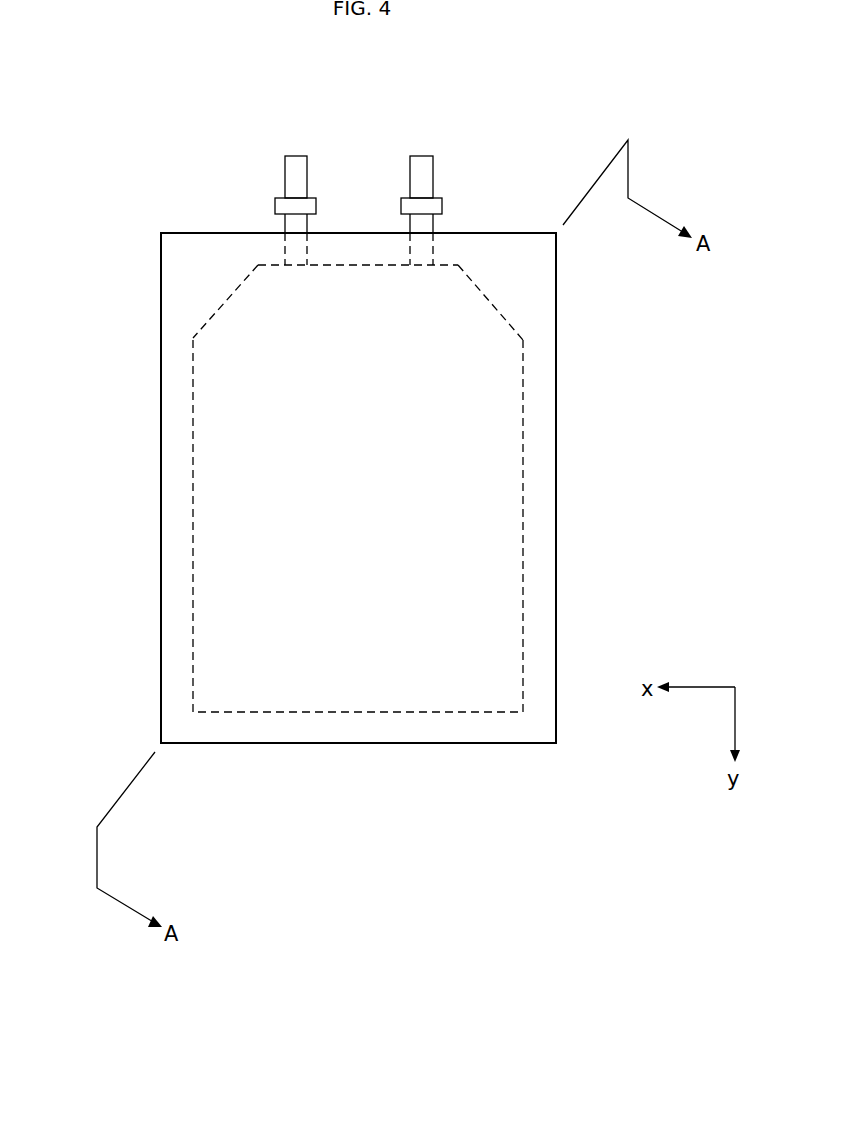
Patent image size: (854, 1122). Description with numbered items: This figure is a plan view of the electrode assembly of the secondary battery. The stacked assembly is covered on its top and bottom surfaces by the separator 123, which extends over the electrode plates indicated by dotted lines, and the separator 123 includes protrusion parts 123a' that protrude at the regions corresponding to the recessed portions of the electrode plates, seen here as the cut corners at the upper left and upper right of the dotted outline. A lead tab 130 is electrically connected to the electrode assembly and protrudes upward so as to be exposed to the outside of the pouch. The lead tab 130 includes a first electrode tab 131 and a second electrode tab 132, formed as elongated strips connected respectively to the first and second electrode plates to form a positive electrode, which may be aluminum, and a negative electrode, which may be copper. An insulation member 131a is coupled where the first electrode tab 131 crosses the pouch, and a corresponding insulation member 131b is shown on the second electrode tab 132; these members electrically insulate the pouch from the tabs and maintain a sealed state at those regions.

The separator 123 is at (524, 229).
The protrusion part 123a' is at (361, 302).
The lead tab 130 is at (357, 160).
The first electrode tab 131 is at (447, 182).
The second electrode tab 132 is at (268, 182).
The insulation member 131a is at (439, 198).
The insulating member of second electrode tab 131b is at (278, 198).